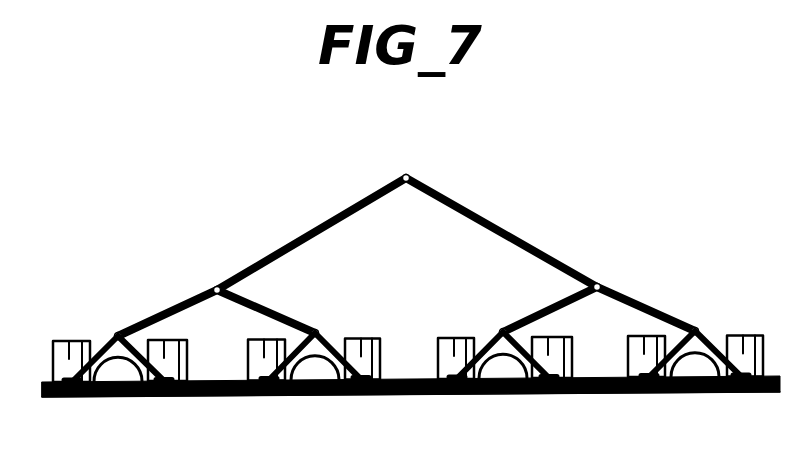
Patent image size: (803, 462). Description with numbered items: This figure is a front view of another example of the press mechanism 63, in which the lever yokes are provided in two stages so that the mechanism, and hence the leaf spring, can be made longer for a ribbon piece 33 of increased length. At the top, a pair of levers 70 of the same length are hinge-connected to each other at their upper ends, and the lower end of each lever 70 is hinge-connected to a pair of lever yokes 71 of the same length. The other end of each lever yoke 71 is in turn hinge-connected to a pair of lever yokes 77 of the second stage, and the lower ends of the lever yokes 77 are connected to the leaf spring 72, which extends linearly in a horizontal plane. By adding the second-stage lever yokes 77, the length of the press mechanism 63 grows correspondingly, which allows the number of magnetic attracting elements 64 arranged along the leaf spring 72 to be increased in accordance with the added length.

The press mechanism 63 is at (407, 237).
The levers 70 is at (310, 236).
The lever yokes 71 is at (175, 308).
The leaf spring 72 is at (403, 379).
The ribbon piece 33 is at (410, 393).
The magnetic attracting elements 64 is at (673, 322).
The lever yokes of the second stage 77 is at (129, 384).